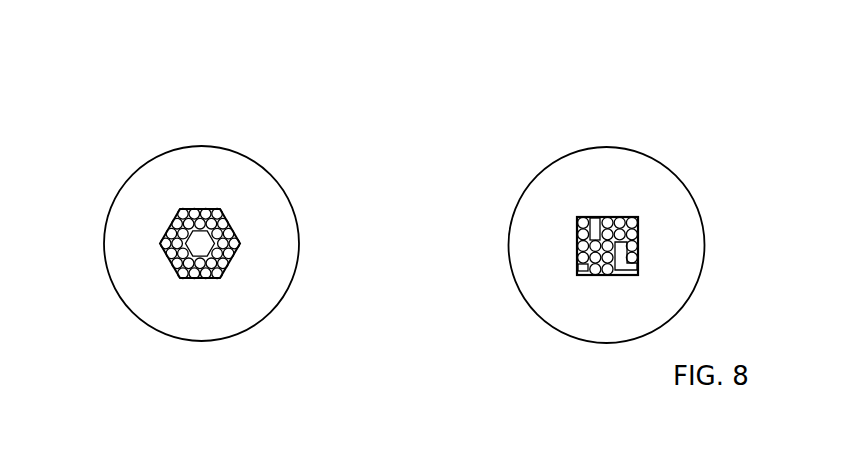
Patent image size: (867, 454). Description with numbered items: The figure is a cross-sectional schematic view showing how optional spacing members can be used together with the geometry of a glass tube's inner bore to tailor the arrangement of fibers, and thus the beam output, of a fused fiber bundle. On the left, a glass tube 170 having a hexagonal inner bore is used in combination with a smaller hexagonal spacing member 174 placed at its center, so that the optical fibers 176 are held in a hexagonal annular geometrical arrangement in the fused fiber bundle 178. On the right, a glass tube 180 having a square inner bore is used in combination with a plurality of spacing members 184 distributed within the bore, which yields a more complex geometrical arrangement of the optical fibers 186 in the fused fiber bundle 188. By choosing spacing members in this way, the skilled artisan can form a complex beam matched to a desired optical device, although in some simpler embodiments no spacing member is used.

The glass tube 170 is at (178, 210).
The hexagonal spacing member 174 is at (205, 247).
The optical fibers 176 is at (173, 262).
The fused fiber bundle 178 is at (228, 114).
The glass tube 180 is at (583, 213).
The spacing members 184 is at (600, 276).
The optical fibers 186 is at (575, 243).
The fused fiber bundle 188 is at (633, 116).